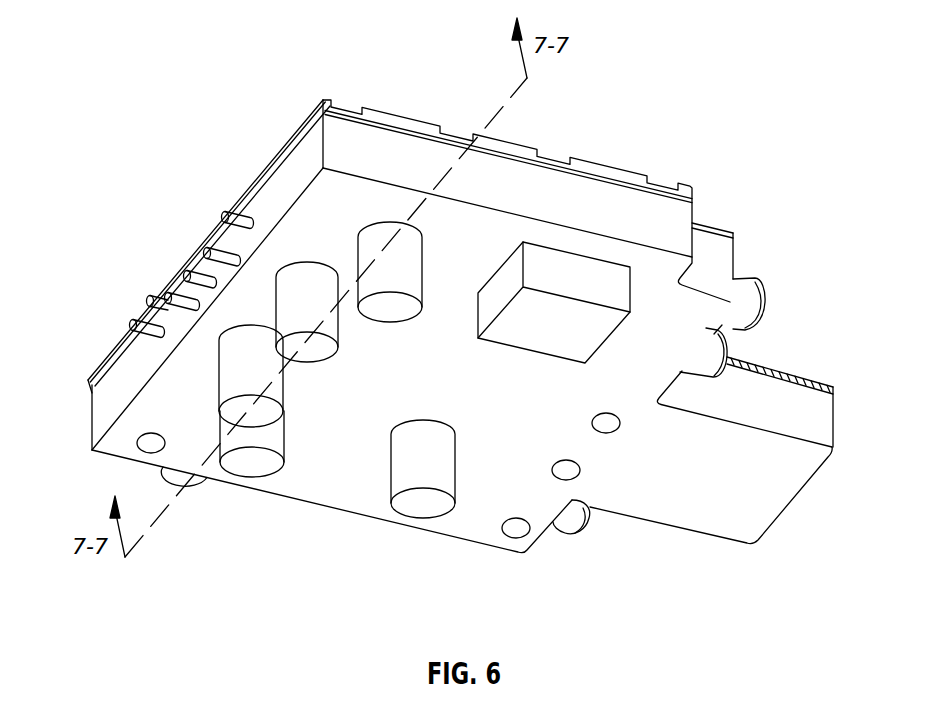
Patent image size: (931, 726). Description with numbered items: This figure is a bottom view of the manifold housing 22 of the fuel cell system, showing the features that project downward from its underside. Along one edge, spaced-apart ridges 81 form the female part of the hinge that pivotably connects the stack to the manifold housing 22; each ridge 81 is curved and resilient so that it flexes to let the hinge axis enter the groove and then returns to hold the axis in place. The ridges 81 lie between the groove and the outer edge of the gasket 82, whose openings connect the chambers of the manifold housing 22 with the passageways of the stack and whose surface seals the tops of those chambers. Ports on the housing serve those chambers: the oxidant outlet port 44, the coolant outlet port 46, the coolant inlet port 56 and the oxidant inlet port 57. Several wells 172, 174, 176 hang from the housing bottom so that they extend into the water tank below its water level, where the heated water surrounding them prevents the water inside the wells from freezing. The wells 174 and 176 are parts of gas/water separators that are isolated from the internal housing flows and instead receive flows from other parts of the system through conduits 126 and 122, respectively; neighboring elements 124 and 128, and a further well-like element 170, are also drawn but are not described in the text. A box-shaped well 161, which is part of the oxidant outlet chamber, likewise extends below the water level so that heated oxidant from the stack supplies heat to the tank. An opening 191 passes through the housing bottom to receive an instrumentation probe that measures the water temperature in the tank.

The manifold housing 22 is at (415, 528).
The oxidant outlet port 44 is at (762, 298).
The coolant outlet port 46 is at (723, 353).
The coolant inlet port 56 is at (583, 528).
The oxidant inlet port 57 is at (180, 485).
The ridges 81 is at (323, 98).
The gasket 82 is at (717, 232).
The conduit 122 is at (207, 253).
The pin 124 is at (187, 275).
The conduit 126 is at (168, 300).
The pin 128 is at (133, 325).
The box-shaped well 161 is at (572, 275).
The cylindrical boss 170 is at (420, 512).
The well 172 is at (257, 470).
The well 174 is at (238, 368).
The well 176 is at (300, 290).
The opening 191 is at (150, 447).